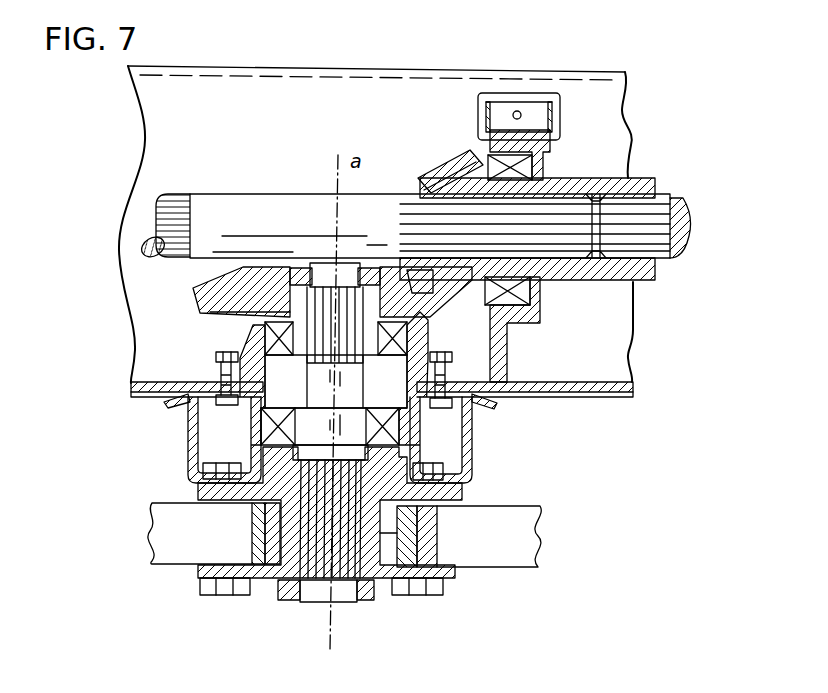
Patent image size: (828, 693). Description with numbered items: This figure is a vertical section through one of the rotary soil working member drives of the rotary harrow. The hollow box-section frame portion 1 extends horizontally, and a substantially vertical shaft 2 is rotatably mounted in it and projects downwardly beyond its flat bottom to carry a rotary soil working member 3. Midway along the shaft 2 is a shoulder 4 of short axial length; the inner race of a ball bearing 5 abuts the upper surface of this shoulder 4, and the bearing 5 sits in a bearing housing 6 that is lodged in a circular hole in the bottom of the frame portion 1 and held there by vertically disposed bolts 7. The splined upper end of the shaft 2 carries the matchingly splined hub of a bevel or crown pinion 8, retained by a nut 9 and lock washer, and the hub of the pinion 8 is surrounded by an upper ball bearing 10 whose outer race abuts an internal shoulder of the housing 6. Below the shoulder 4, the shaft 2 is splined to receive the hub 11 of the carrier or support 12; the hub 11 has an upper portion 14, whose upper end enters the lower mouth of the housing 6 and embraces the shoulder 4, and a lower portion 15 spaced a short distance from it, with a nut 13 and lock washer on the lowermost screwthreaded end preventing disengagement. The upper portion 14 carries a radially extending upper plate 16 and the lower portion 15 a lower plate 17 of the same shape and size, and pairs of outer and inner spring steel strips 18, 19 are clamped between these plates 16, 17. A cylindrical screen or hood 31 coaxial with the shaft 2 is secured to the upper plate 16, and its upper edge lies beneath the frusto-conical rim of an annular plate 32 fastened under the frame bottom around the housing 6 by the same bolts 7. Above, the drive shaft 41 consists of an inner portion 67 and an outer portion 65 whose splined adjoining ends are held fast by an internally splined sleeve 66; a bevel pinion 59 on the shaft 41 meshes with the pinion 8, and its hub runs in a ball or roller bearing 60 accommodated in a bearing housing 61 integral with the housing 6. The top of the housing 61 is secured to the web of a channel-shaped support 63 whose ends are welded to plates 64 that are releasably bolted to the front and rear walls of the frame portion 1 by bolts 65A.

The hollow box-section frame portion 1 is at (610, 392).
The shaft 2 is at (332, 263).
The rotary soil working member 3 is at (336, 432).
The shoulder 4 is at (337, 446).
The ball bearing 5 is at (402, 432).
The bearing housing 6 is at (252, 328).
The bolts 7 is at (216, 356).
The bevel or crown pinion 8 is at (198, 296).
The nut 9 is at (301, 268).
The upper ball bearing 10 is at (412, 342).
The hub 11 is at (194, 579).
The carrier or support 12 is at (141, 522).
The nut 13 is at (285, 600).
The upper portion 14 is at (330, 503).
The lower portion 15 is at (375, 560).
The upper plate 16 is at (203, 492).
The lower plate 17 is at (205, 590).
The outer spring steel strip 18 is at (255, 518).
The inner spring steel strip 19 is at (270, 545).
The cylindrical screen or hood 31 is at (476, 452).
The annular plate 32 is at (480, 407).
The shaft 41 is at (208, 182).
The bevel pinion 59 is at (445, 176).
The ball or roller bearing 60 is at (540, 172).
The bearing housing 61 is at (552, 160).
The support 63 is at (480, 112).
The plates 64 is at (488, 93).
The outer portion 65 is at (680, 205).
The bolts 65A is at (520, 112).
The internally splined sleeve 66 is at (610, 165).
The inner portion 67 is at (257, 203).